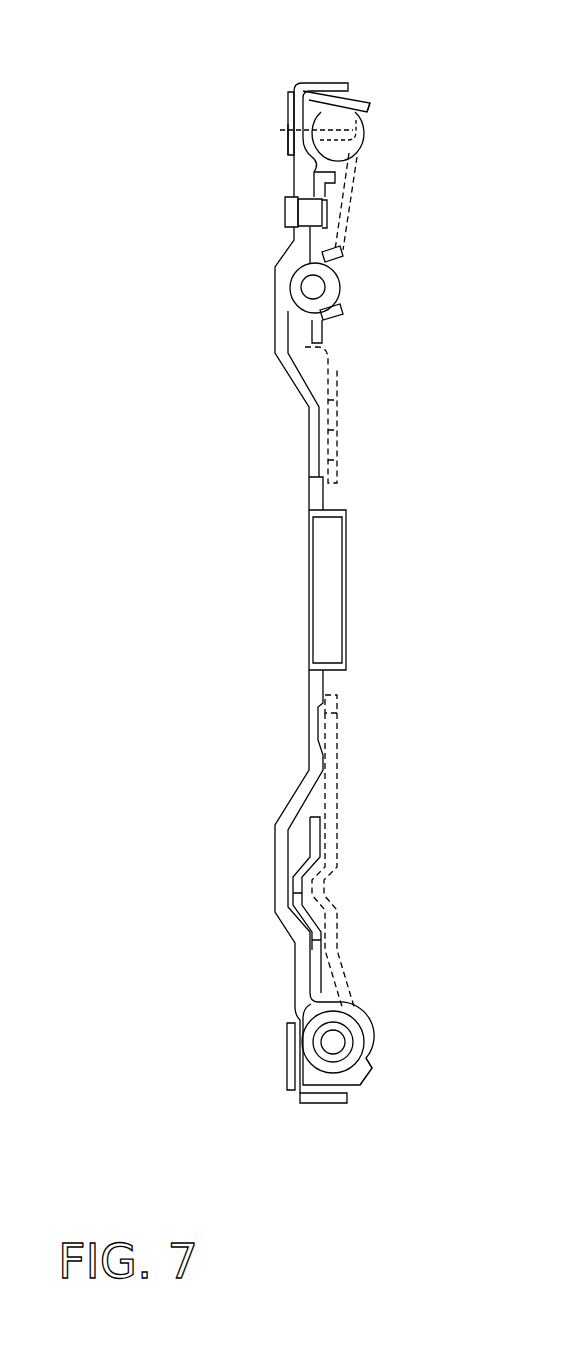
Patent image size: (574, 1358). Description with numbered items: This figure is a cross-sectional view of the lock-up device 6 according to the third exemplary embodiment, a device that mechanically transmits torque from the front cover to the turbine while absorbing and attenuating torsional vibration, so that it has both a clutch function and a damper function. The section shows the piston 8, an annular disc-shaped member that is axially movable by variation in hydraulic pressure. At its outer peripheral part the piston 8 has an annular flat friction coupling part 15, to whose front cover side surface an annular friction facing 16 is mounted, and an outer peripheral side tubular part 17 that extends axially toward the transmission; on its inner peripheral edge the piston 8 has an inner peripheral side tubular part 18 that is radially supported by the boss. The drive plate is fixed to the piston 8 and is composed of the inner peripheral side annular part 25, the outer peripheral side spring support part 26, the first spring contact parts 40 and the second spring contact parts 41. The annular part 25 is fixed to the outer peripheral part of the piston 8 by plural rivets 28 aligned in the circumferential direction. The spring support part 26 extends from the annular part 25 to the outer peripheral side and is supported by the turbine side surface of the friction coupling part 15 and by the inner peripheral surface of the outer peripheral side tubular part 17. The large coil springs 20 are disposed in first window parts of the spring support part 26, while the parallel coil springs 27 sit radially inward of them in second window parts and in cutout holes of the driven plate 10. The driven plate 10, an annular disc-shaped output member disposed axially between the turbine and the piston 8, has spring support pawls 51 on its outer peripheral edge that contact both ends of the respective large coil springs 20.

The lock-up device 6 is at (407, 715).
The piston 8 is at (306, 436).
The driven plate 10 is at (345, 385).
The friction coupling part 15 is at (288, 100).
The friction facing 16 is at (285, 146).
The outer peripheral side tubular part 17 is at (324, 82).
The inner peripheral side tubular part 18 is at (342, 500).
The large coil spring 20 is at (360, 160).
The inner peripheral side annular part 25 is at (320, 334).
The outer peripheral side spring support part 26 is at (358, 88).
The parallel coil spring 27 is at (335, 288).
The rivet 28 is at (322, 216).
The first spring contact part 40 is at (367, 118).
The second spring contact part 41 is at (362, 128).
The spring support pawl 51 is at (312, 128).